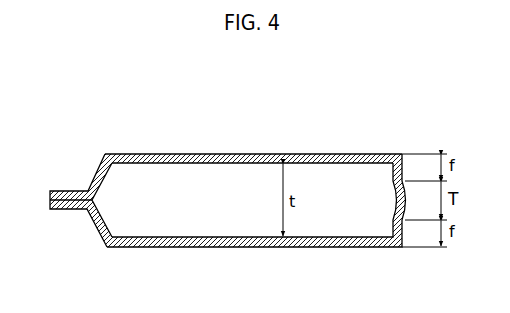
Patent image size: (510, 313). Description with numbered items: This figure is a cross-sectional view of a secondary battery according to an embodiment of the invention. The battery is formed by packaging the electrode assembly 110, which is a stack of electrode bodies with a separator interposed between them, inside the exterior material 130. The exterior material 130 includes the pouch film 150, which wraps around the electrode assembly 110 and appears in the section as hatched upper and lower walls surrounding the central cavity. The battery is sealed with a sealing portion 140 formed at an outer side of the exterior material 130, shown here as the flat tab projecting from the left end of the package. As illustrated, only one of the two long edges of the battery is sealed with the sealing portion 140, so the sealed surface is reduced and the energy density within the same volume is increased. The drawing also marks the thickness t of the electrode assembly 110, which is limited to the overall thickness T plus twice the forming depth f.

The electrode assembly 110 is at (241, 237).
The exterior material 130 is at (310, 156).
The pouch film 150 is at (174, 156).
The sealing portion 140 is at (65, 212).